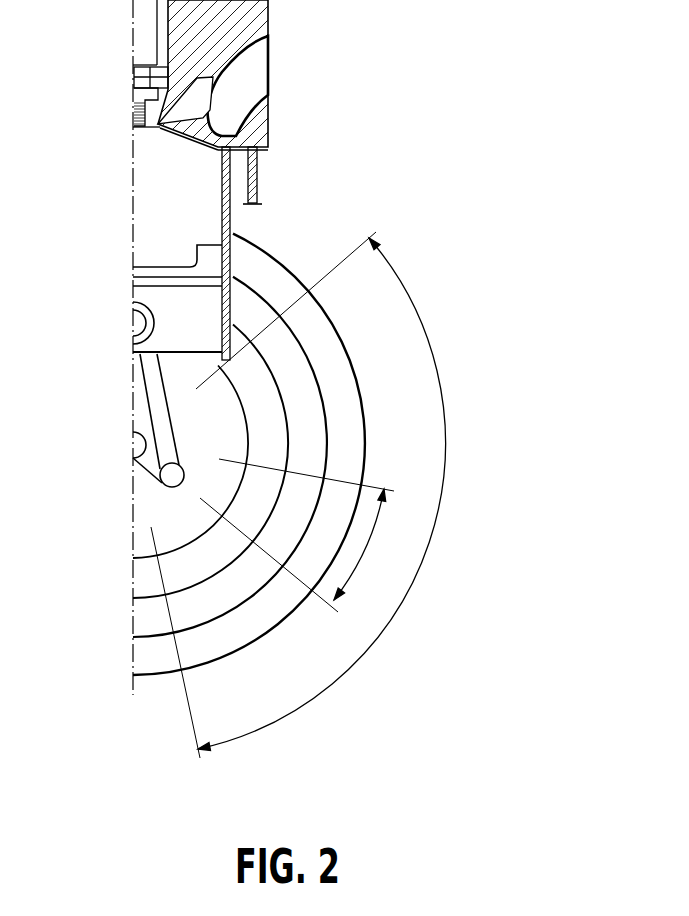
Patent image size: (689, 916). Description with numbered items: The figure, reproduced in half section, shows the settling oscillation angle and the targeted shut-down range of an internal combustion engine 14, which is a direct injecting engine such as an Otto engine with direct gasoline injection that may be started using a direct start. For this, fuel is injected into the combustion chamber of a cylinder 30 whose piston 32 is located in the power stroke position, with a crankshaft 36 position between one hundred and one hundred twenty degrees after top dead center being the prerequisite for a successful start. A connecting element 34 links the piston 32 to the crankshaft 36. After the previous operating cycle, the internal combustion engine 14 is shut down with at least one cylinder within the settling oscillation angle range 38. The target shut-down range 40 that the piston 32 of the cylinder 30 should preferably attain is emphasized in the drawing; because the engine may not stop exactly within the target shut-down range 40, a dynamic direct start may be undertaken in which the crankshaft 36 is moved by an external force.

The internal combustion engine 14 is at (324, 84).
The cylinder 30 is at (210, 226).
The piston 32 is at (140, 292).
The support strut 34 is at (150, 398).
The crankshaft 36 is at (133, 445).
The settling oscillation angle range 38 is at (445, 443).
The target shut-down range 40 is at (370, 543).